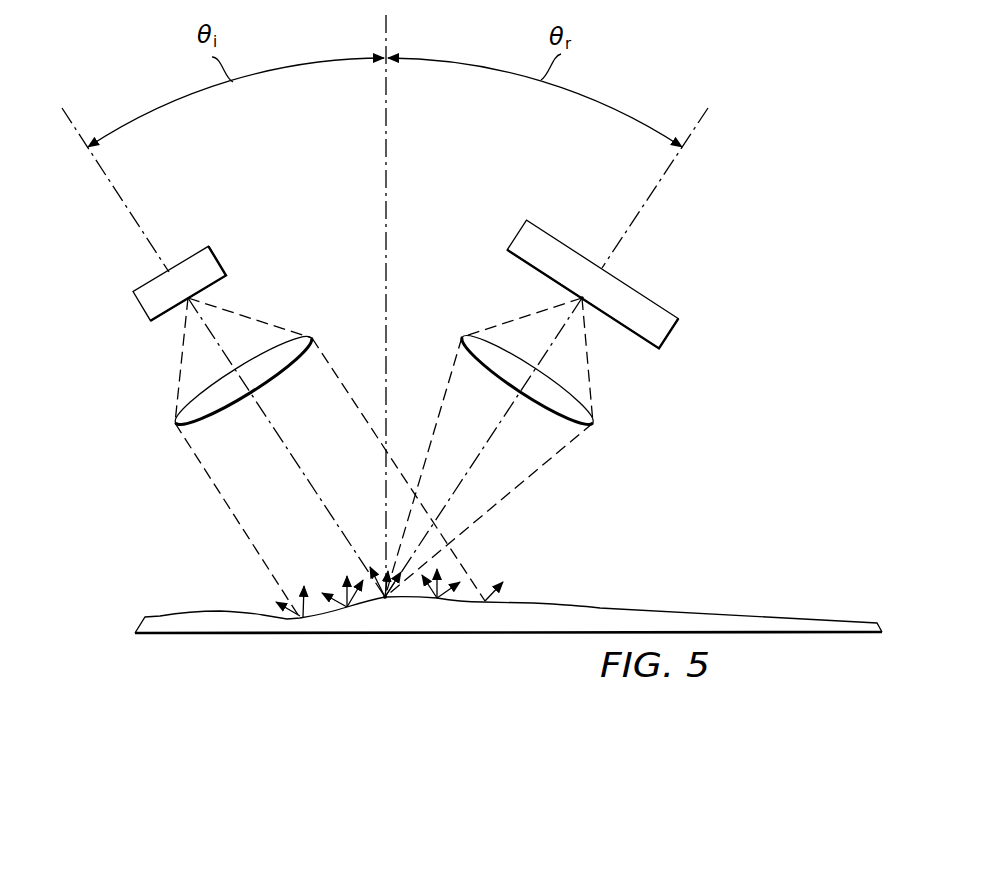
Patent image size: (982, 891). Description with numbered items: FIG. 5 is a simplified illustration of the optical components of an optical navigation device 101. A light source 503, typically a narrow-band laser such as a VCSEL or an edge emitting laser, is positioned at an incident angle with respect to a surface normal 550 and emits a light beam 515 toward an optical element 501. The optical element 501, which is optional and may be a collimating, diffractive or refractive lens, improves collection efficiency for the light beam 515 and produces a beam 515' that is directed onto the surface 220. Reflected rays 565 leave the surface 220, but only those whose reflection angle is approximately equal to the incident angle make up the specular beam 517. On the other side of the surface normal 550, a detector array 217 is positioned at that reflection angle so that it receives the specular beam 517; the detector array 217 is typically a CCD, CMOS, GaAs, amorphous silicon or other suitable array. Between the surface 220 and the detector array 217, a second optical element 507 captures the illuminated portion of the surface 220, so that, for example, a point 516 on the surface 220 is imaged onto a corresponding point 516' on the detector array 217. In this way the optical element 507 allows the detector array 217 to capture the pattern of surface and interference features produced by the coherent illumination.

The optical navigation device 101 is at (785, 193).
The detector array 217 is at (647, 296).
The surface 220 is at (756, 618).
The optical element 501 is at (227, 417).
The light source 503 is at (210, 252).
The optical element 507 is at (547, 415).
The light beam 515 is at (211, 360).
The beam 515' is at (326, 478).
The point 516 is at (408, 638).
The point 516' is at (527, 349).
The specular beam 517 is at (521, 486).
The surface normal 550 is at (386, 42).
The reflected rays 565 is at (506, 580).